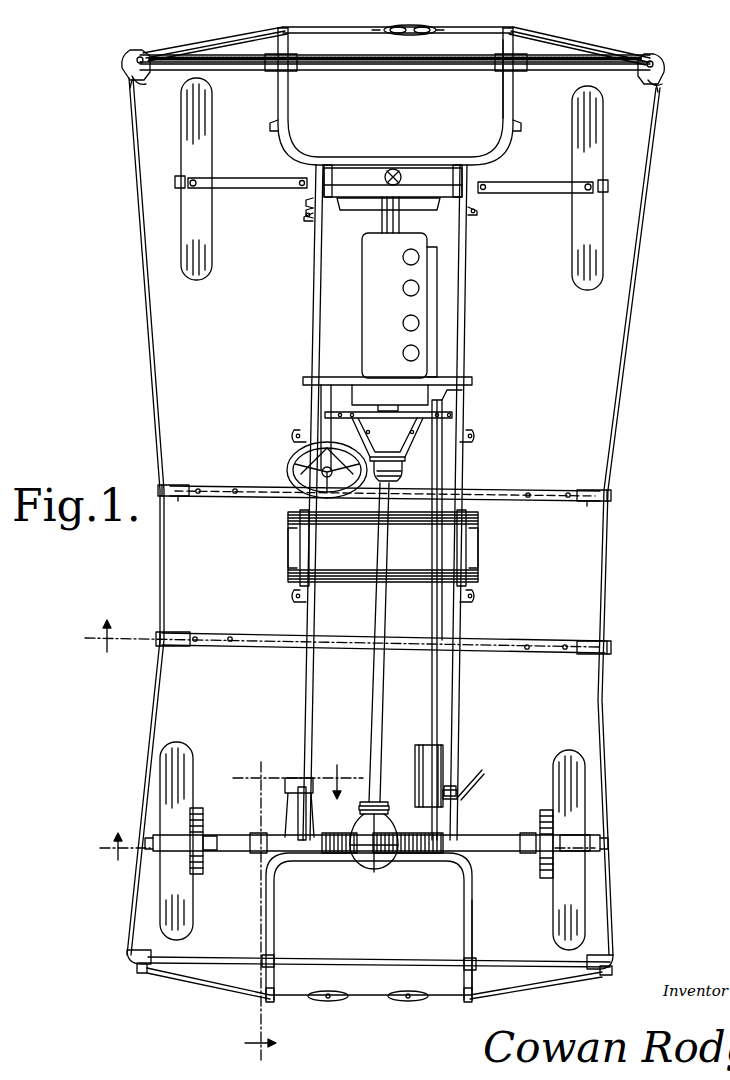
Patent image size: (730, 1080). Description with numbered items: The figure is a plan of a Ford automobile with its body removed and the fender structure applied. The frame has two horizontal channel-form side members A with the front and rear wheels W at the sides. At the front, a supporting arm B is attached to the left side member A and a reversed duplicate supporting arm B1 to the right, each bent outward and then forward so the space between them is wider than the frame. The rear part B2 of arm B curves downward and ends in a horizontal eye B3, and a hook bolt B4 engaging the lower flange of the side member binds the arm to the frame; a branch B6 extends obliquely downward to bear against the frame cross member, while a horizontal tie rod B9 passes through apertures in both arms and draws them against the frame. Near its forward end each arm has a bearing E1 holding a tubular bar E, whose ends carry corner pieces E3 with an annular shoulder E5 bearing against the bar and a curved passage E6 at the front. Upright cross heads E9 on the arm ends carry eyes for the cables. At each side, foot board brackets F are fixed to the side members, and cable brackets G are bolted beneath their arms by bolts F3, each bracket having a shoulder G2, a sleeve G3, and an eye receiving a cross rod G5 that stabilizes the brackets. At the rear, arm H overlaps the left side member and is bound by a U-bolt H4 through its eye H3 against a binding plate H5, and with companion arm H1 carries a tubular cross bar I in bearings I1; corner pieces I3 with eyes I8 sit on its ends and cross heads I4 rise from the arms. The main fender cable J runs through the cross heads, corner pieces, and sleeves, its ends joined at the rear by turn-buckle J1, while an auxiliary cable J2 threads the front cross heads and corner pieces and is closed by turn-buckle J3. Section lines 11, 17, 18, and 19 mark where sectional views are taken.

The frame side member A is at (315, 304).
The supporting arm B is at (286, 94).
The supporting arm B1 is at (502, 118).
The rear part of arm B2 is at (312, 201).
The horizontal eye B3 is at (312, 211).
The hook bolt B4 is at (308, 214).
The branch B6 is at (321, 166).
The tie rod B9 is at (362, 168).
The tubular bar E is at (272, 61).
The bearing E1 is at (280, 72).
The corner piece E3 is at (136, 76).
The annular shoulder E5 is at (140, 79).
The passage E6 is at (137, 54).
The cross head E9 is at (296, 18).
The foot board bracket F is at (262, 488).
The bolt F3 is at (235, 490).
The cable bracket G is at (176, 498).
The shoulder G2 is at (180, 500).
The sleeve G3 is at (161, 492).
The cross rod G5 is at (413, 490).
The rear arm H is at (268, 926).
The rear arm H1 is at (474, 937).
The horizontal eye H3 is at (298, 785).
The U-bolt H4 is at (460, 801).
The binding plate H5 is at (418, 786).
The cross bar I is at (366, 960).
The bearing I1 is at (270, 958).
The corner piece I3 is at (135, 965).
The cross head I4 is at (267, 998).
The eye I8 is at (143, 975).
The main fender cable J is at (618, 378).
The turn-buckle J1 is at (365, 999).
The auxiliary cable J2 is at (158, 62).
The turn-buckle J3 is at (400, 28).
The wheel W is at (190, 262).
The section line 11 is at (329, 634).
The section line 17 is at (332, 852).
The section line 18 is at (259, 910).
The section line 19 is at (287, 782).